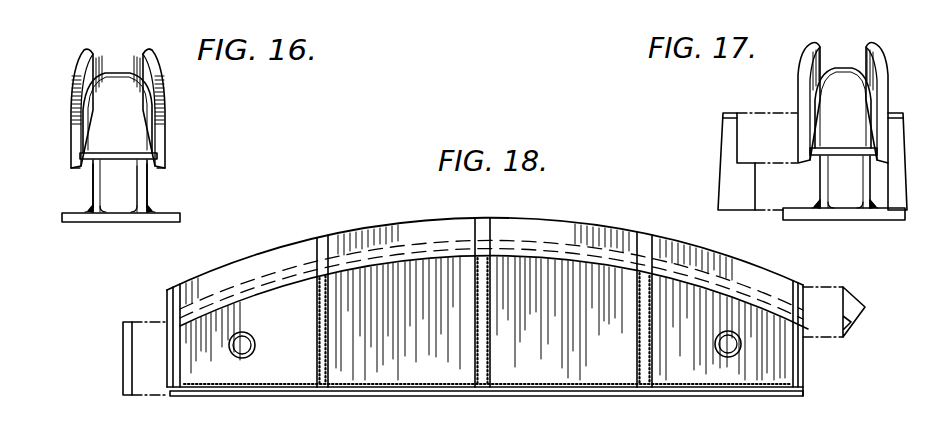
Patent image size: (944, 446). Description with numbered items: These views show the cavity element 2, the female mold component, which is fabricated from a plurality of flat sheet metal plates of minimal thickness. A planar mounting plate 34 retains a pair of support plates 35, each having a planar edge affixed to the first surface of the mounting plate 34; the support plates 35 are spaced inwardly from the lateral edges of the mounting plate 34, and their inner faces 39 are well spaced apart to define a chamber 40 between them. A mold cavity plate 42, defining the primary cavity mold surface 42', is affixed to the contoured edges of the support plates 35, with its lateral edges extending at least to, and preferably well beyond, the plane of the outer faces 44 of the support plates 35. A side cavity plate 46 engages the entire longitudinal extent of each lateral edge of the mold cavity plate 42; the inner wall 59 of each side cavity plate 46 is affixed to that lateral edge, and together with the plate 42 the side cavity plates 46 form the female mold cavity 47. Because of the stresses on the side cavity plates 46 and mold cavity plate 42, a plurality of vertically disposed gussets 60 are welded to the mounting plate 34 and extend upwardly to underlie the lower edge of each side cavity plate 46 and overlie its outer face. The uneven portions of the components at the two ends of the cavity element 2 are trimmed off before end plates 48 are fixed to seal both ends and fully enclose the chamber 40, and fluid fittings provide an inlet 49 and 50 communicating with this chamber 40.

In FIG. 16, the cavity element 2 is at (174, 118).
In FIG. 18, the cavity element 2 is at (294, 232).
In FIG. 16, the mounting plate 34 is at (160, 224).
In FIG. 18, the mounting plate 34 is at (578, 398).
In FIG. 16, the support plates 35 is at (97, 172).
In FIG. 18, the support plates 35 is at (456, 348).
In FIG. 16, the inner faces 39 is at (136, 200).
In FIG. 16, the chamber 40 is at (115, 177).
In FIG. 16, the mold cavity plate 42 is at (107, 49).
In FIG. 18, the mold cavity plate 42 is at (491, 270).
In FIG. 18, the primary cavity mold surface 42' is at (491, 250).
In FIG. 16, the outer faces 44 is at (149, 193).
In FIG. 16, the side cavity plates 46 is at (73, 72).
In FIG. 18, the side cavity plates 46 is at (553, 219).
In FIG. 16, the female mold cavity 47 is at (122, 120).
In FIG. 18, the end plates 48 is at (122, 350).
In FIG. 18, the inlet 49 is at (728, 357).
In FIG. 18, the inlet 50 is at (250, 340).
In FIG. 16, the inner wall 59 is at (139, 55).
In FIG. 18, the gussets 60 is at (646, 314).